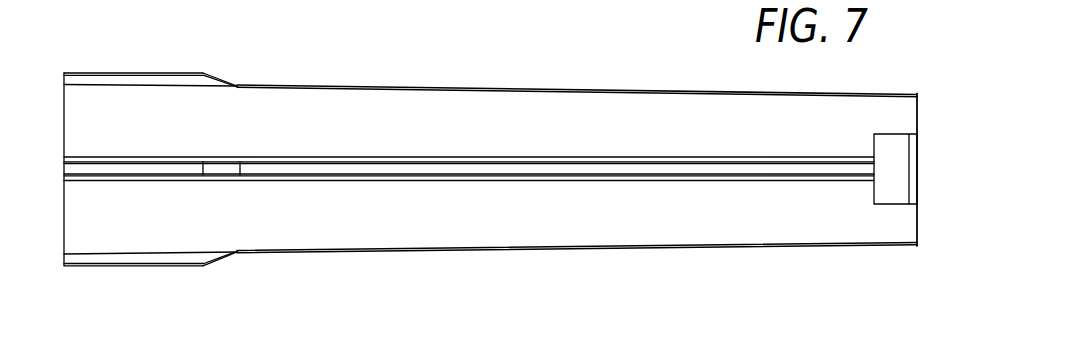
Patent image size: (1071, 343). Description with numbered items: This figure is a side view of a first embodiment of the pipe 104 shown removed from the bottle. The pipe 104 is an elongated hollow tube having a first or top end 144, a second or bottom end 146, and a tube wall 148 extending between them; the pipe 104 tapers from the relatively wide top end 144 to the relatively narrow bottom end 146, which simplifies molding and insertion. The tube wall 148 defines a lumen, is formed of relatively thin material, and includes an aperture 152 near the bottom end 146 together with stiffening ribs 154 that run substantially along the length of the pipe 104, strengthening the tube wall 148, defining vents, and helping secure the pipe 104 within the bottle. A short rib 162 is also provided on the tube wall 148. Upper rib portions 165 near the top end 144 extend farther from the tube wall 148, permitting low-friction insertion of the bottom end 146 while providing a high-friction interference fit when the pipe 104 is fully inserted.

The pipe 104 is at (449, 80).
The top end 144 is at (64, 117).
The upper rib portions 165 is at (147, 75).
The tube wall 148 is at (612, 115).
The bottom end 146 is at (917, 112).
The ribs 154 is at (618, 248).
The aperture 152 is at (888, 182).
The short rib 162 is at (388, 342).